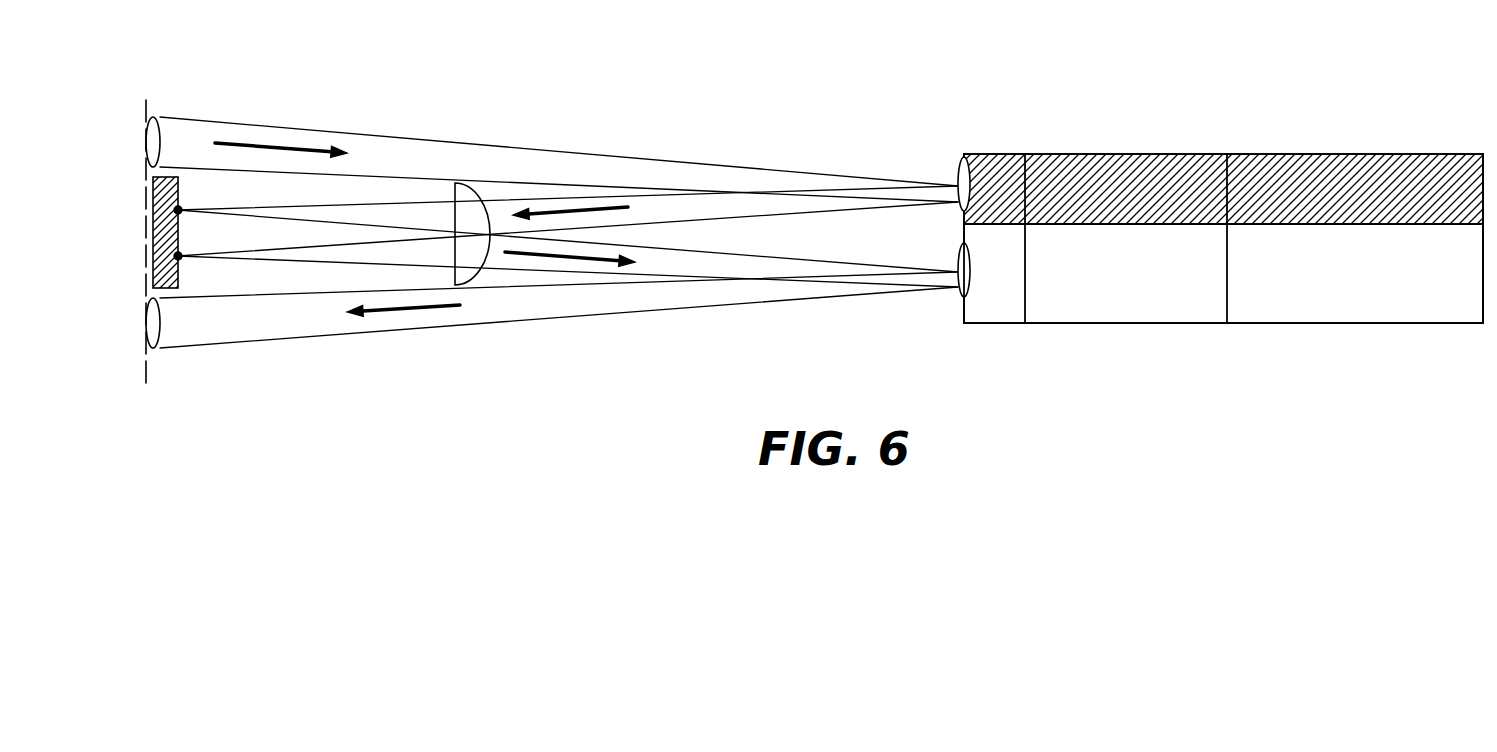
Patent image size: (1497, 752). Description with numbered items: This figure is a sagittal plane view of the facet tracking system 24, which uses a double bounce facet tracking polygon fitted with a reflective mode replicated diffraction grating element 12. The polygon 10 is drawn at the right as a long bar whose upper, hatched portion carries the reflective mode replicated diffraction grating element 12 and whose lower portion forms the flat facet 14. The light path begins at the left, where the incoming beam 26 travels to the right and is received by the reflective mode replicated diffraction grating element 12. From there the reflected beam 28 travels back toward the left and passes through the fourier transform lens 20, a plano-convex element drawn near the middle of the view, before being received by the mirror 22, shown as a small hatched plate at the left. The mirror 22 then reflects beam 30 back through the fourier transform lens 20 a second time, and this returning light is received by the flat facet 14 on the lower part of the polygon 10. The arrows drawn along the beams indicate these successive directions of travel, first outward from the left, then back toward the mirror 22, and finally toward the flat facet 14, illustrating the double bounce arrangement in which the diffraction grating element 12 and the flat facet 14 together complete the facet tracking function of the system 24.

The optical fiber bundle assembly 10 is at (1240, 124).
The reflective mode replicated diffraction grating element 12 is at (998, 165).
The flat facet 14 is at (993, 311).
The fourier transform lens 20 is at (478, 273).
The mirror 22 is at (178, 275).
The facet tracking system 24 is at (219, 100).
The incoming beam 26 is at (277, 135).
The reflected beam 28 is at (690, 205).
The beam 30 is at (720, 250).